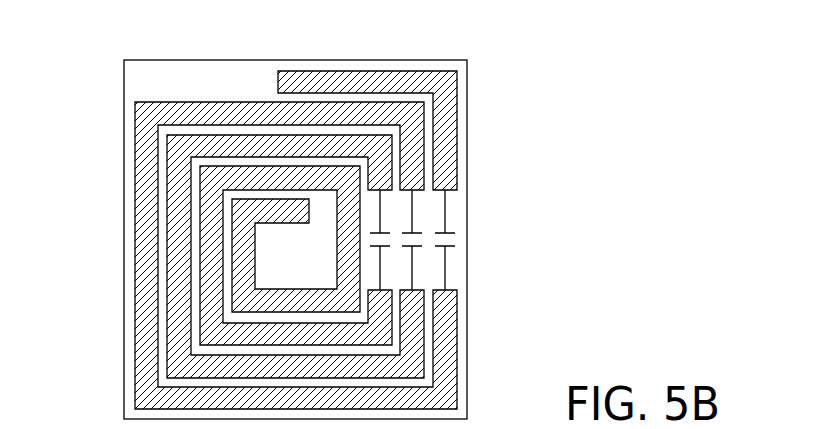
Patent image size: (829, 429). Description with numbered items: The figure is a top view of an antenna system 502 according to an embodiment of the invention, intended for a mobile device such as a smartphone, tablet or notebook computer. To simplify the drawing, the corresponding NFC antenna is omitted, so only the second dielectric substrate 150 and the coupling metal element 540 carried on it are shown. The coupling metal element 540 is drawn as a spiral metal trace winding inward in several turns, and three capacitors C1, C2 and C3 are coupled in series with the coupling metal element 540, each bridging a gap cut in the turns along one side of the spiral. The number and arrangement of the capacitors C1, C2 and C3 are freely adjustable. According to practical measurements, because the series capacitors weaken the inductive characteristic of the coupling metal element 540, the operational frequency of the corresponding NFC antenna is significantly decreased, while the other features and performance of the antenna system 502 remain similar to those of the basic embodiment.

The second dielectric substrate 150 is at (140, 82).
The coupling metal element 540 is at (140, 252).
The antenna system 502 is at (554, 98).
The capacitor C1 is at (384, 231).
The capacitor C2 is at (416, 248).
The capacitor C3 is at (450, 240).